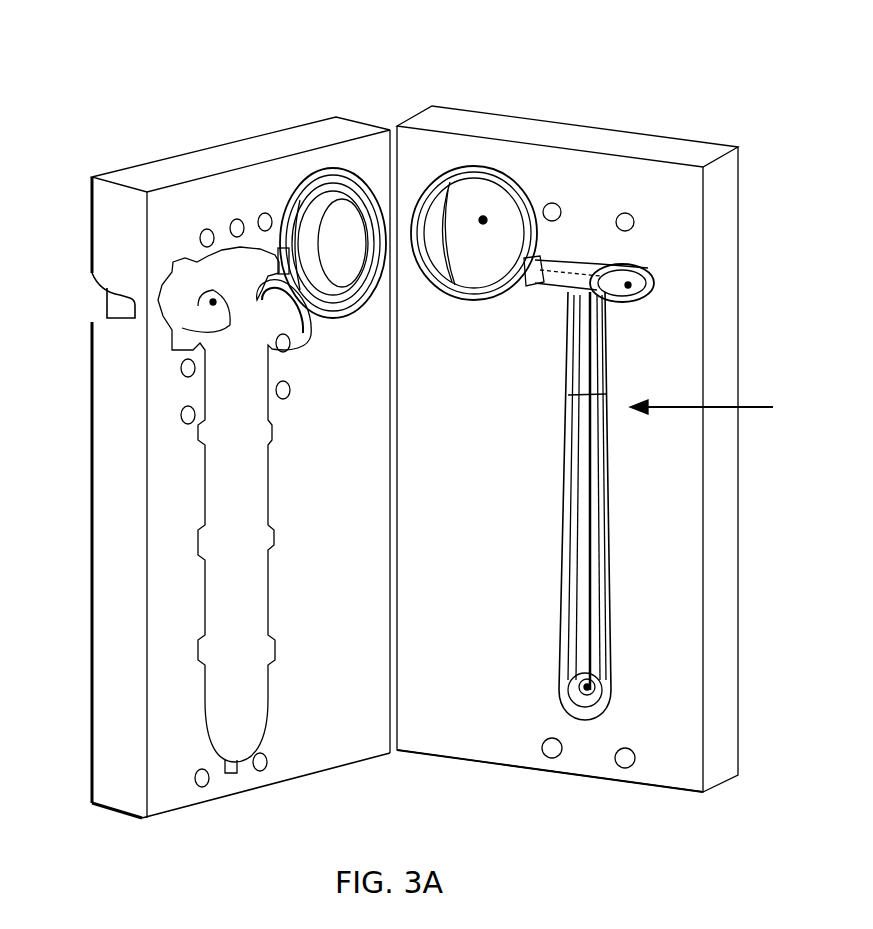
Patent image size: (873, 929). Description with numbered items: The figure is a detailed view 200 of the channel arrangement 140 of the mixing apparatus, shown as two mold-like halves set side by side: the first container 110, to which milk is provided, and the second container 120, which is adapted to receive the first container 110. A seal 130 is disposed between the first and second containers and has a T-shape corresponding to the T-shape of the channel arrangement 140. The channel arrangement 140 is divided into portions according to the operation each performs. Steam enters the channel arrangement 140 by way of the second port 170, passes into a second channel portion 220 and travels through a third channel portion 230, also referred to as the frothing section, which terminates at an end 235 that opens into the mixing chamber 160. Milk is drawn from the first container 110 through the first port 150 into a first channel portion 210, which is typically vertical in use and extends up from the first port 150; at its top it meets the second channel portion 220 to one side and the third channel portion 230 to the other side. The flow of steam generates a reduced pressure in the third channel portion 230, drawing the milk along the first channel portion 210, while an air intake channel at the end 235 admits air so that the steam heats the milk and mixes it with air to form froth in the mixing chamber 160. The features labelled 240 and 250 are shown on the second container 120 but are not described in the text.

The detailed view 200 is at (658, 64).
The second container 120 is at (237, 155).
The first container 110 is at (500, 130).
The seal 130 is at (267, 432).
The second port 170 is at (175, 332).
The ring cavity 240 is at (312, 245).
The hook channel 250 is at (303, 330).
The mixing chamber 160 is at (483, 220).
The end 235 is at (535, 262).
The third channel portion 230 is at (587, 275).
The second channel portion 220 is at (633, 292).
The first channel portion 210 is at (592, 525).
The channel arrangement 140 is at (725, 409).
The first port 150 is at (587, 686).